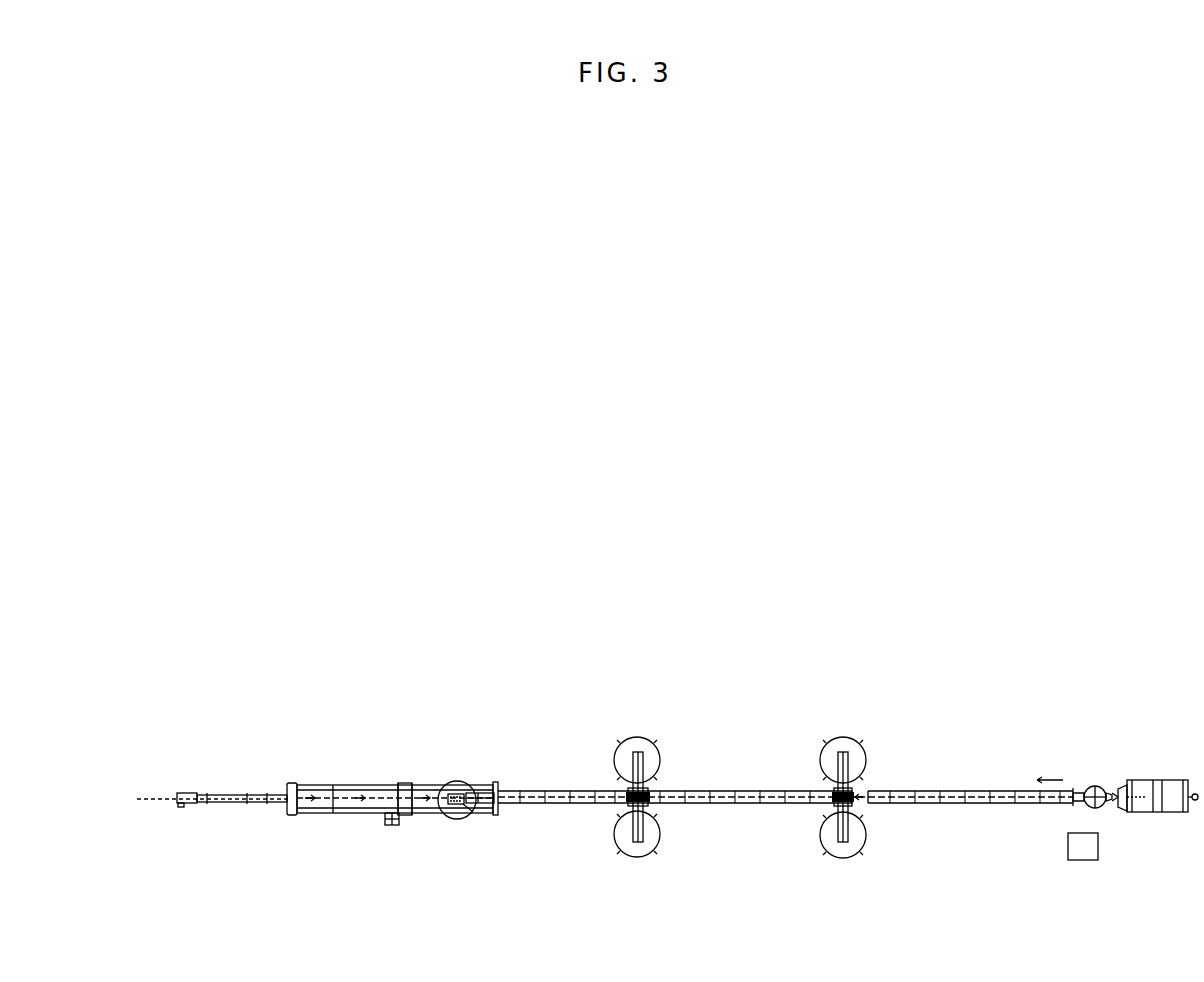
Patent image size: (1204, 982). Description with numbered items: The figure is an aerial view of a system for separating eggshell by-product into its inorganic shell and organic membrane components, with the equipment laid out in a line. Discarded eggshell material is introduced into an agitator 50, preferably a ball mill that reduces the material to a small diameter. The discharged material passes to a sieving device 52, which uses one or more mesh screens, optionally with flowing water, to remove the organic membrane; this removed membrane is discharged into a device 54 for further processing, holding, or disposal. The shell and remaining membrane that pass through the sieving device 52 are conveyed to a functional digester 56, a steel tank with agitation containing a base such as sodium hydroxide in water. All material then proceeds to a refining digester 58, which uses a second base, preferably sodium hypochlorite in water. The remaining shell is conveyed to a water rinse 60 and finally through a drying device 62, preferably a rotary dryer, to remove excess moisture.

The agitator 50 is at (1165, 780).
The sieving device 52 is at (1085, 825).
The device 54 is at (1104, 848).
The functional digester 56 is at (866, 762).
The refining digester 58 is at (660, 762).
The water rinse 60 is at (545, 805).
The drying device 62 is at (450, 781).